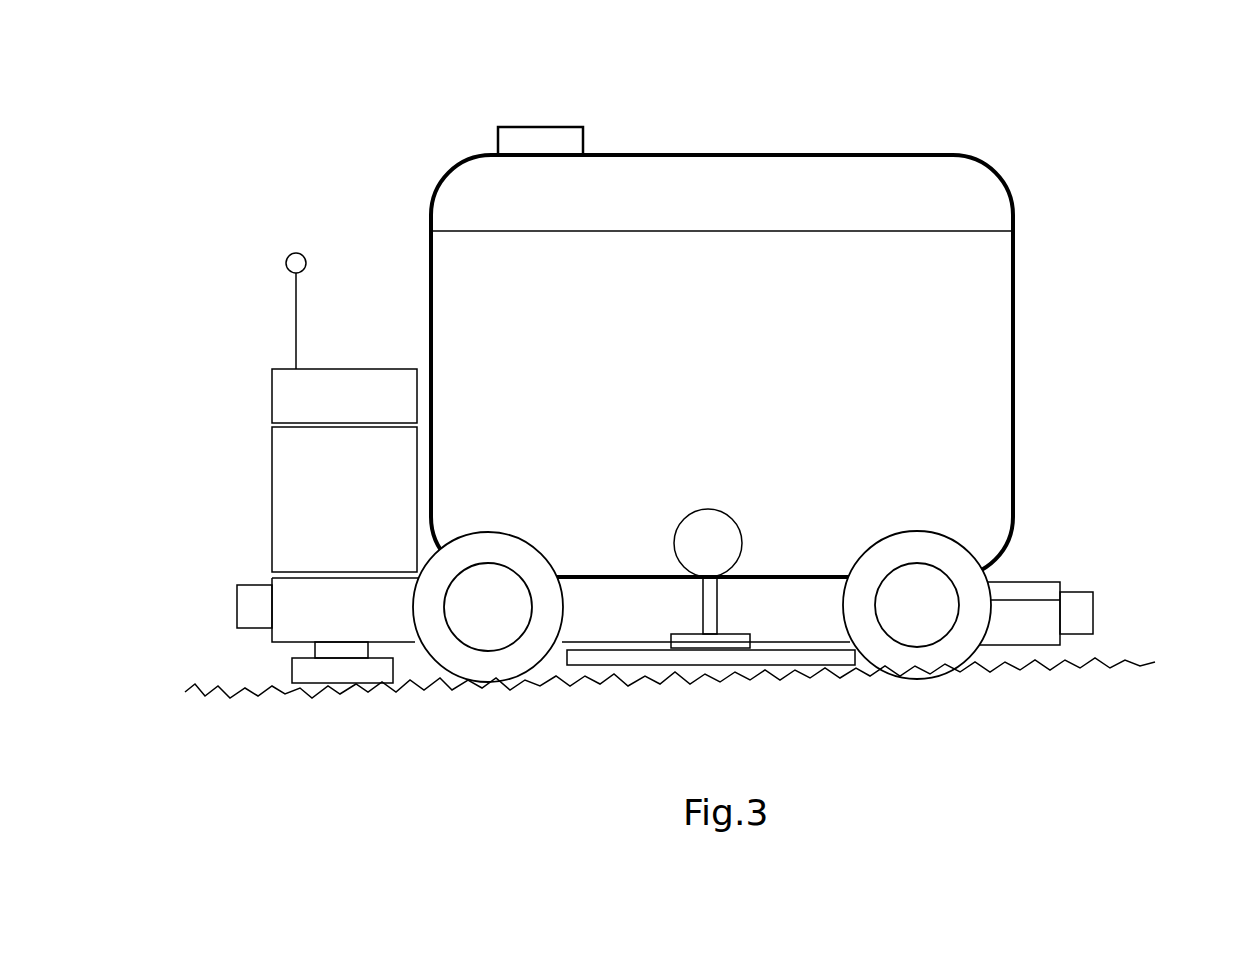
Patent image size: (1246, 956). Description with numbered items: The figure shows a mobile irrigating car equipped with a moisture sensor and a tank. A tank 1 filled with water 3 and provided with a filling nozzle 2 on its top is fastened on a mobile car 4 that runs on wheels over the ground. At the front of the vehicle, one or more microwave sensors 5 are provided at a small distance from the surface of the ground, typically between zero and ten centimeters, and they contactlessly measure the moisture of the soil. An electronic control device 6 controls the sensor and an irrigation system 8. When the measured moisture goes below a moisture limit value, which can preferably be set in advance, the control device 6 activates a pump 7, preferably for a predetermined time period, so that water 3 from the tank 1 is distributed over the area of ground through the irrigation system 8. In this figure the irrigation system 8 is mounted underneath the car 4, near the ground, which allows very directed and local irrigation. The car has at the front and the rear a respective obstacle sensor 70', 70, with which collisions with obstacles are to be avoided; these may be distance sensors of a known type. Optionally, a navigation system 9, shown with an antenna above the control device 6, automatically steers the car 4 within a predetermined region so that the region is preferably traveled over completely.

The tank 1 is at (1008, 192).
The filling nozzle 2 is at (529, 143).
The water 3 is at (983, 305).
The mobile car 4 is at (1040, 593).
The microwave sensor 5 is at (305, 672).
The electronic control device 6 is at (294, 489).
The pump 7 is at (702, 565).
The irrigation system 8 is at (616, 650).
The navigation system 9 is at (290, 392).
The obstacle sensor 70 is at (1144, 604).
The obstacle sensor 70' is at (195, 587).